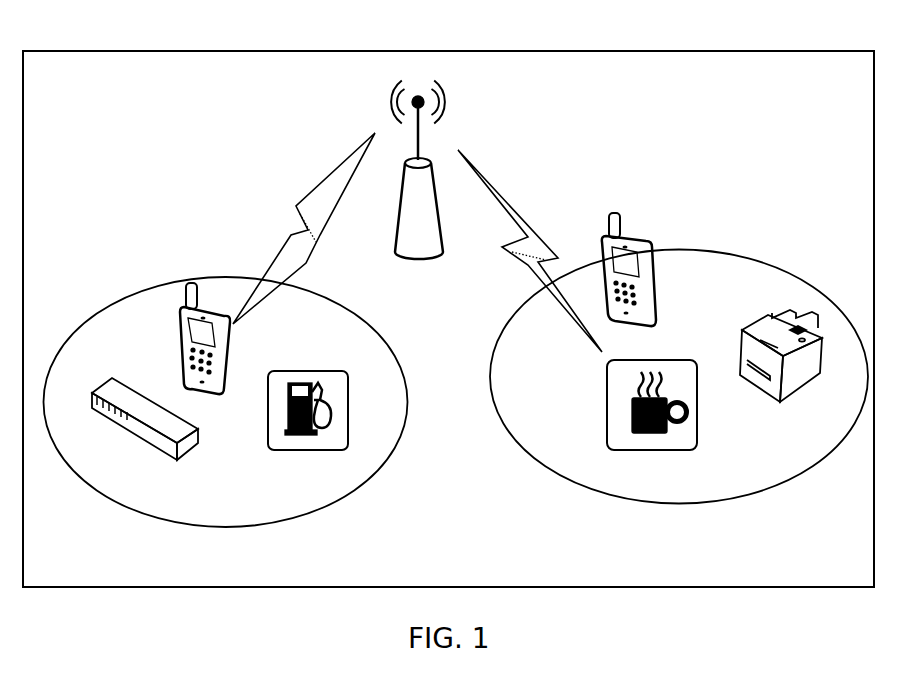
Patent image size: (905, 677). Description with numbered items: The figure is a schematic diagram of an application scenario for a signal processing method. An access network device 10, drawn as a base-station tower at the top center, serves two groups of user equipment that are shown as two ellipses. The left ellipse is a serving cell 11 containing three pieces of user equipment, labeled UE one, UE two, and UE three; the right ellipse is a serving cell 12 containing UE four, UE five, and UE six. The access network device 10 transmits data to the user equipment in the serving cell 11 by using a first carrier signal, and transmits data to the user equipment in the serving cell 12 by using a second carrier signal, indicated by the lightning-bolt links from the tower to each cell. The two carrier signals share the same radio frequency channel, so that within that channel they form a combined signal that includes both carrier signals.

The access network device 10 is at (371, 170).
The serving cell 11 is at (226, 384).
The serving cell 12 is at (679, 358).